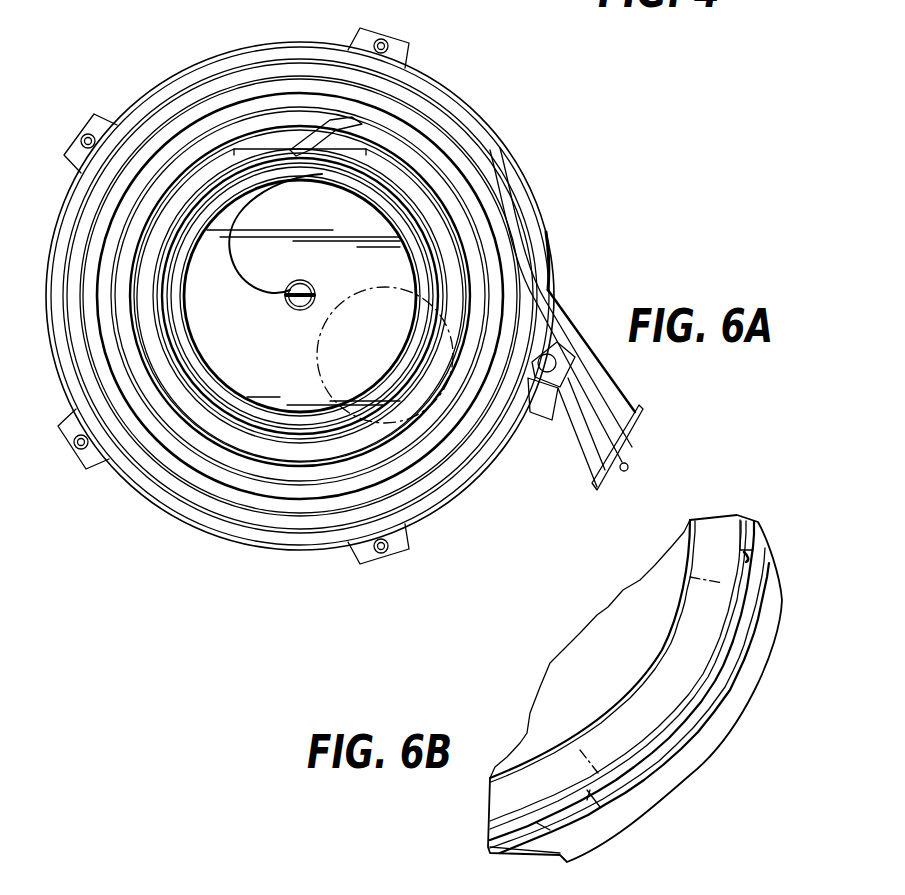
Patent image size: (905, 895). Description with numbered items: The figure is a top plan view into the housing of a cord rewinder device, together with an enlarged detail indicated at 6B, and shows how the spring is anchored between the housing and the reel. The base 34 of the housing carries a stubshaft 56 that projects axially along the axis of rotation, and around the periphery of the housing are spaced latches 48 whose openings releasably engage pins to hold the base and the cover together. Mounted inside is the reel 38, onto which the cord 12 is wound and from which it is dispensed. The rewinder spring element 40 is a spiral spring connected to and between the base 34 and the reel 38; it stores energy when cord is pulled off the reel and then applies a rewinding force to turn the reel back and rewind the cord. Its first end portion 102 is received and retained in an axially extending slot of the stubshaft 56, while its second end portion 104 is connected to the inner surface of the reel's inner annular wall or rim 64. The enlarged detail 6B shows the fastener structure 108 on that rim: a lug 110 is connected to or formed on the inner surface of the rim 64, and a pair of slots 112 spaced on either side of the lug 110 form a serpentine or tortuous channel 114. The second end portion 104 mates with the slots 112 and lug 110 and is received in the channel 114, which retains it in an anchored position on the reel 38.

In FIG. 6A, the cord 12 is at (487, 183).
In FIG. 6A, the base 34 is at (547, 244).
In FIG. 6A, the reel 38 is at (296, 55).
In FIG. 6B, the reel 38 is at (757, 686).
In FIG. 6A, the rewinder spring element 40 is at (321, 170).
In FIG. 6B, the rewinder spring element 40 is at (678, 645).
In FIG. 6A, the latches 48 is at (393, 38).
In FIG. 6A, the stubshaft 56 is at (297, 281).
In FIG. 6A, the first end portion 102 is at (292, 304).
In FIG. 6A, the second end portion 104 is at (410, 372).
In FIG. 6B, the second end portion 104 is at (677, 724).
In FIG. 6A, the detail indication 6B is at (320, 398).
In FIG. 6B, the inner annular wall or rim 64 is at (748, 556).
In FIG. 6B, the fastener structure 108 is at (681, 757).
In FIG. 6B, the lug 110 is at (690, 718).
In FIG. 6B, the slots 112 is at (722, 637).
In FIG. 6B, the serpentine or tortuous channel 114 is at (690, 698).